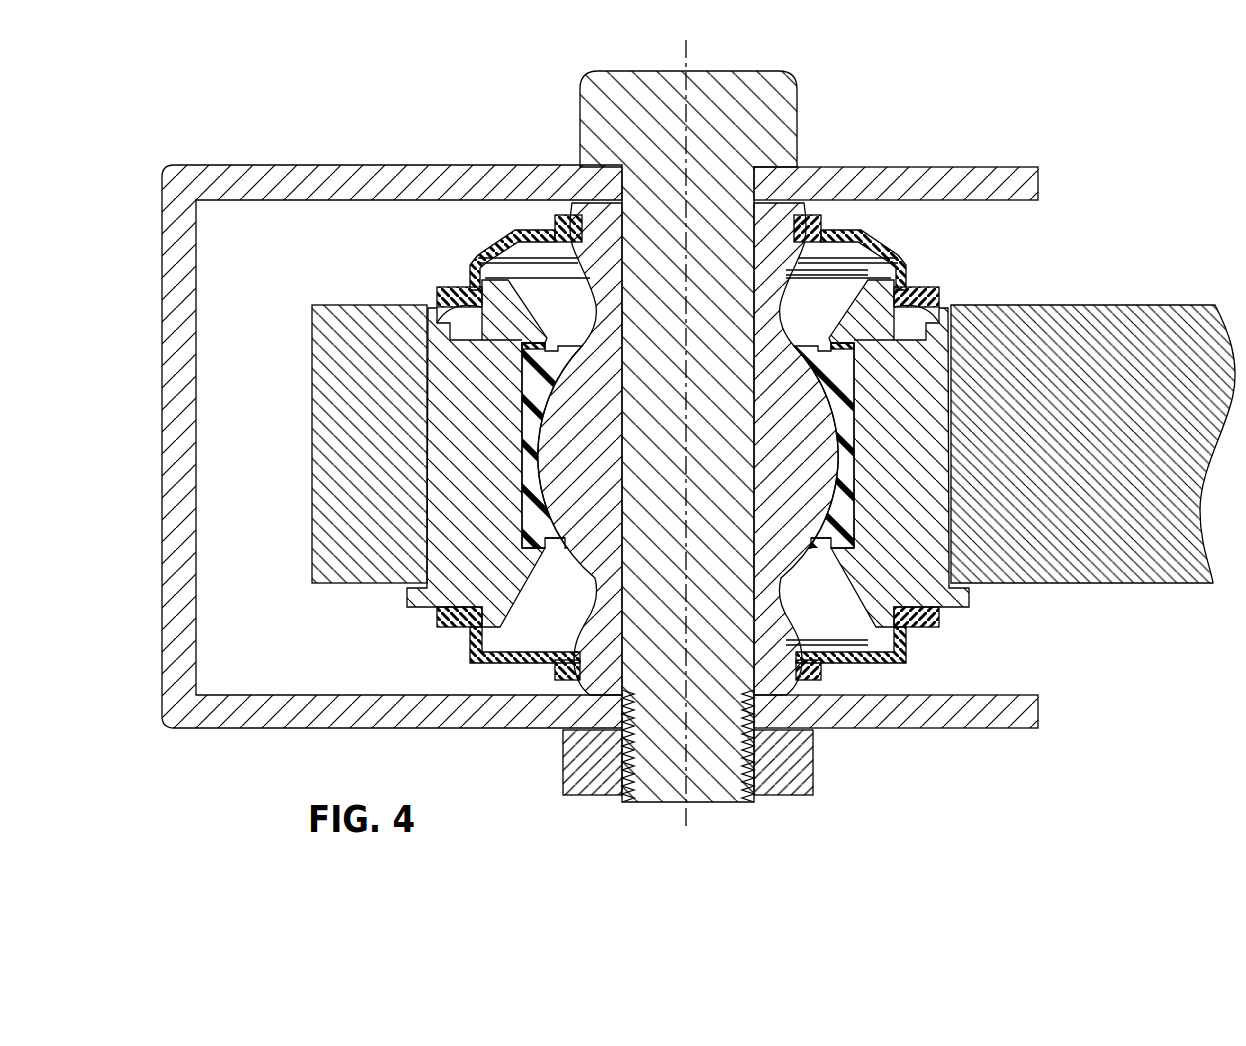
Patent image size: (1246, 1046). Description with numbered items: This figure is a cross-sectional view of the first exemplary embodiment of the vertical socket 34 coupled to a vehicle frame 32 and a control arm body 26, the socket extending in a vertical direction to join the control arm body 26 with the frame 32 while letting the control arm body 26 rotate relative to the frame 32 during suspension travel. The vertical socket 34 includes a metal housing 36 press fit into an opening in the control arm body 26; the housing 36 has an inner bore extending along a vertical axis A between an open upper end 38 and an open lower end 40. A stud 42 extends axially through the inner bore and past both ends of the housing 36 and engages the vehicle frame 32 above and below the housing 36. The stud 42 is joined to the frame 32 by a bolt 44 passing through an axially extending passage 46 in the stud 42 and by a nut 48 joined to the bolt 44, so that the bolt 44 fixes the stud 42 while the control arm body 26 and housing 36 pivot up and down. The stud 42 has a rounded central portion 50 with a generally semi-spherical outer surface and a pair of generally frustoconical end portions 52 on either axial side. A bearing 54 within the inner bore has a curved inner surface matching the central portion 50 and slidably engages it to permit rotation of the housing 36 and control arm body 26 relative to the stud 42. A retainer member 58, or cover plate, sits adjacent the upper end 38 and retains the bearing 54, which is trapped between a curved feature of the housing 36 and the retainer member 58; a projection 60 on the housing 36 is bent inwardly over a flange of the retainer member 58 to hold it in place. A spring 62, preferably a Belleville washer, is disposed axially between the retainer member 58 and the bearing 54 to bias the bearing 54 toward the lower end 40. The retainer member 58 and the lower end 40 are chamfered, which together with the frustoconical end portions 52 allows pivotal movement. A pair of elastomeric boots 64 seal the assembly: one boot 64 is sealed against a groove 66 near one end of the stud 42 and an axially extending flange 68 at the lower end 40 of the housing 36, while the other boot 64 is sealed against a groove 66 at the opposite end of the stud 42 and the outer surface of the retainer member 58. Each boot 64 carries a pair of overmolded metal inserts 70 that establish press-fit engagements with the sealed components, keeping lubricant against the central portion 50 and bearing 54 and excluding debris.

The vertical axis A is at (684, 56).
The control arm body 26 is at (1008, 310).
The vehicle frame 32 is at (1008, 167).
The vertical socket 34 is at (914, 258).
The housing 36 is at (927, 568).
The open upper end 38 is at (942, 300).
The open lower end 40 is at (888, 660).
The stud 42 is at (847, 475).
The bolt 44 is at (592, 80).
The axially extending passage 46 is at (605, 222).
The nut 48 is at (803, 770).
The rounded central portion 50 is at (565, 465).
The frustoconical end portions 52 is at (860, 250).
The bearing 54 is at (860, 388).
The retainer member 58 is at (430, 333).
The projection 60 is at (440, 302).
The spring 62 is at (527, 350).
The boots 64 is at (880, 235).
The groove 66 is at (812, 222).
The axially extending flange 68 is at (472, 642).
The metal inserts 70 is at (472, 288).